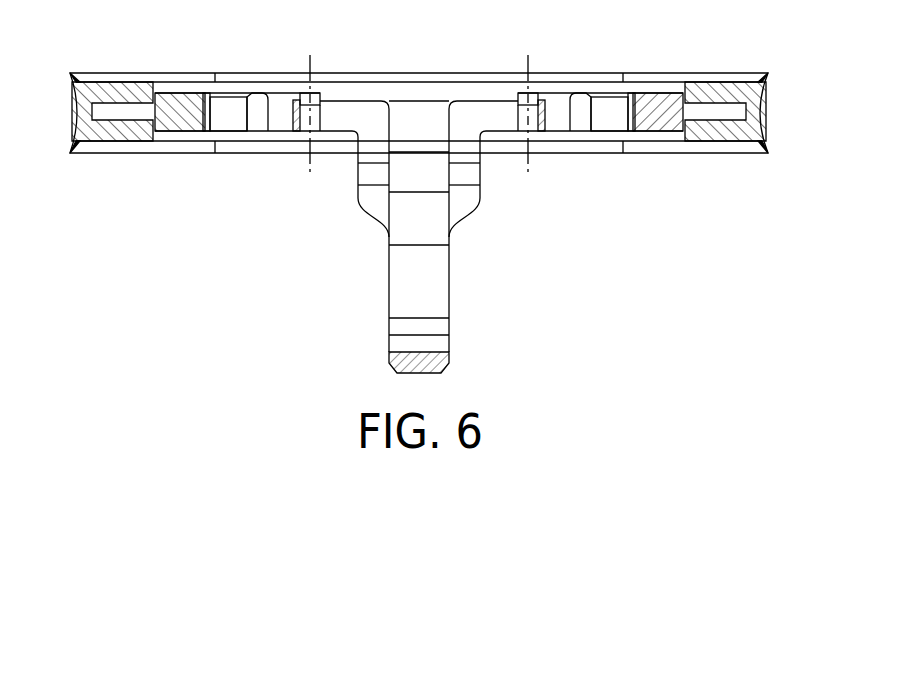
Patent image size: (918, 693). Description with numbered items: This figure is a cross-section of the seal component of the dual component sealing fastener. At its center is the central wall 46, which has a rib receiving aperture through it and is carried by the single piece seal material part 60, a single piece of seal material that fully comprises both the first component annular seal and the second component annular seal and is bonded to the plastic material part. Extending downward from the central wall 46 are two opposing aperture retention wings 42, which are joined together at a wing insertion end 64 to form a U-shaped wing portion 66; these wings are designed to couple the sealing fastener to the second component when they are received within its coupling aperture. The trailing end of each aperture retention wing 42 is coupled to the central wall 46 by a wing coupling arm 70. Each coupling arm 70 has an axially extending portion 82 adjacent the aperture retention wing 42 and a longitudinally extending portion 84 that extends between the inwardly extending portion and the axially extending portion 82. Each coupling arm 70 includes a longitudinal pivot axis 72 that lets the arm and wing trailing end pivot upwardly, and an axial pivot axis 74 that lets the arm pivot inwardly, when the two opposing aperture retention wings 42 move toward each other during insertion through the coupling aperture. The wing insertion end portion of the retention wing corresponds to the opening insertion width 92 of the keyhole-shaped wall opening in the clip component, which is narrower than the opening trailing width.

The aperture retention wing 42 is at (432, 225).
The central wall 46 is at (181, 110).
The single piece seal material part 60 is at (121, 135).
The wing insertion end 64 is at (417, 360).
The U-shaped wing portion 66 is at (450, 290).
The wing coupling arm 70 is at (355, 101).
The longitudinal pivot axis 72 is at (293, 110).
The axial pivot axis 74 is at (309, 57).
The axially extending portion 82 is at (372, 158).
The longitudinally extending portion 84 is at (348, 115).
The opening insertion width 92 is at (350, 226).